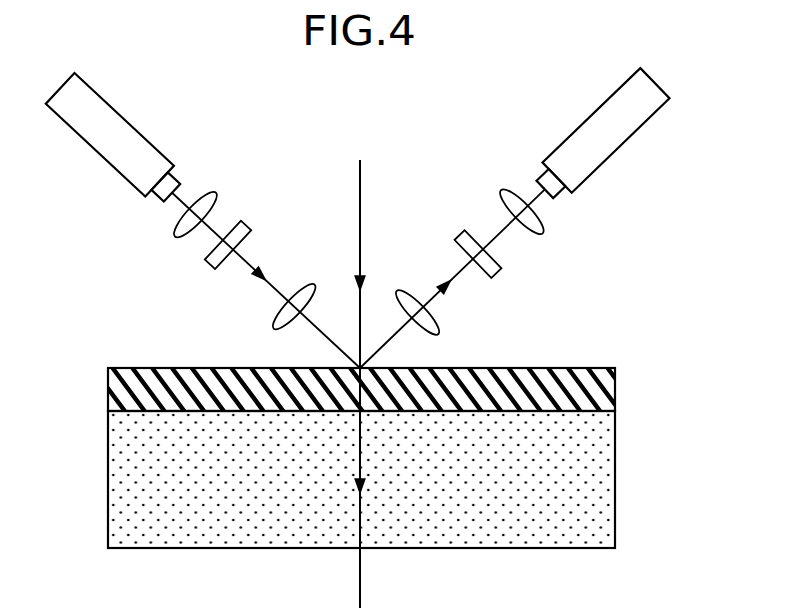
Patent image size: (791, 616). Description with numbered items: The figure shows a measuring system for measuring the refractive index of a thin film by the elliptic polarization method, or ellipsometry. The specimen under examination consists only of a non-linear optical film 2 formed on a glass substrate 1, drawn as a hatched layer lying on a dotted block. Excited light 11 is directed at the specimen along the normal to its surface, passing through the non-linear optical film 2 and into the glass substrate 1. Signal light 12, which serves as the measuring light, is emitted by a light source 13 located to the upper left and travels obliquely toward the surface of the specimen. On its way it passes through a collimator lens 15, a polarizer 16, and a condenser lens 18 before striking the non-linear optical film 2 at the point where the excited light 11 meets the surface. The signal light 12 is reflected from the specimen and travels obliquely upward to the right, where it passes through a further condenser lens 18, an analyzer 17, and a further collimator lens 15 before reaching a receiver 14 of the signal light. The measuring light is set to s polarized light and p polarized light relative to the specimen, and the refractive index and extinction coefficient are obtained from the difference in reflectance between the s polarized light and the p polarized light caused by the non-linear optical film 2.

The glass substrate 1 is at (607, 482).
The non-linear optical film 2 is at (612, 388).
The excited light 11 is at (360, 205).
The signal light 12 is at (266, 279).
The light source of the signal light 13 is at (125, 113).
The receiver of the signal light 14 is at (635, 139).
The collimator lens 15 is at (178, 231).
The polarizer 16 is at (213, 262).
The analyzer 17 is at (503, 271).
The condenser lens 18 is at (313, 284).